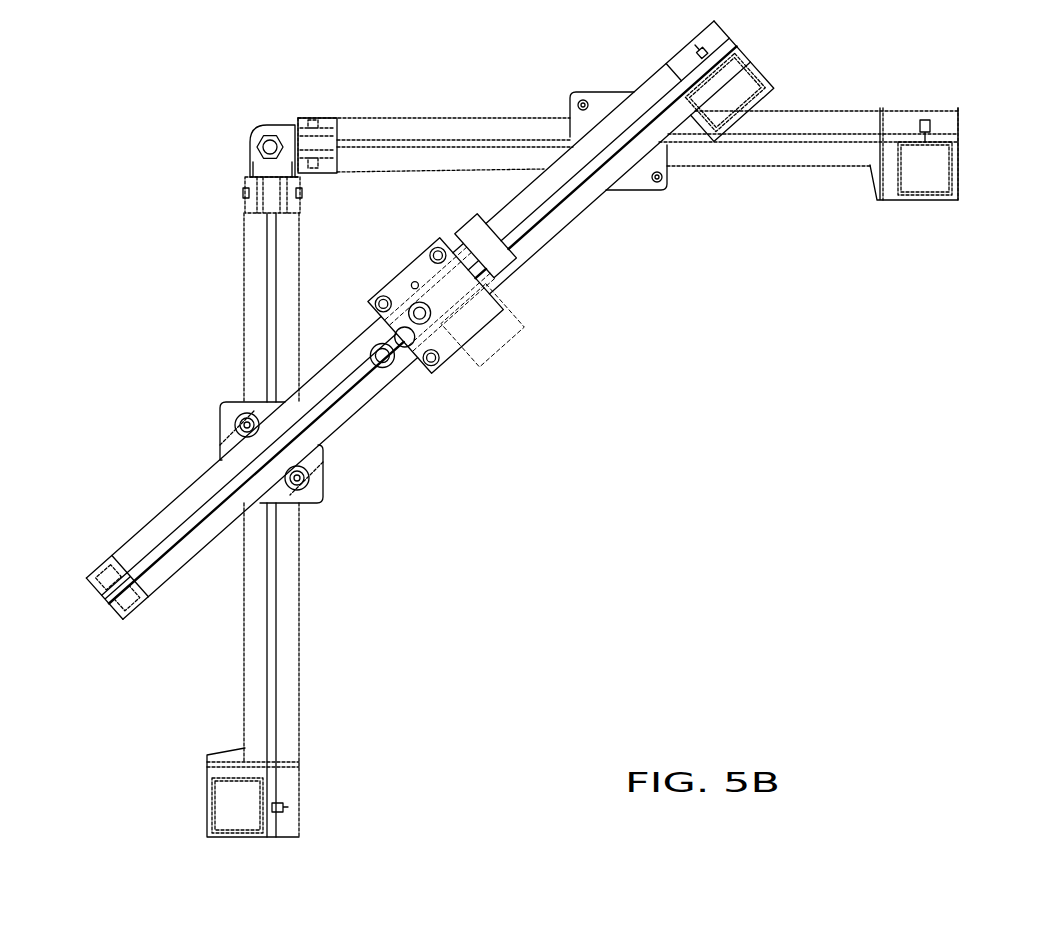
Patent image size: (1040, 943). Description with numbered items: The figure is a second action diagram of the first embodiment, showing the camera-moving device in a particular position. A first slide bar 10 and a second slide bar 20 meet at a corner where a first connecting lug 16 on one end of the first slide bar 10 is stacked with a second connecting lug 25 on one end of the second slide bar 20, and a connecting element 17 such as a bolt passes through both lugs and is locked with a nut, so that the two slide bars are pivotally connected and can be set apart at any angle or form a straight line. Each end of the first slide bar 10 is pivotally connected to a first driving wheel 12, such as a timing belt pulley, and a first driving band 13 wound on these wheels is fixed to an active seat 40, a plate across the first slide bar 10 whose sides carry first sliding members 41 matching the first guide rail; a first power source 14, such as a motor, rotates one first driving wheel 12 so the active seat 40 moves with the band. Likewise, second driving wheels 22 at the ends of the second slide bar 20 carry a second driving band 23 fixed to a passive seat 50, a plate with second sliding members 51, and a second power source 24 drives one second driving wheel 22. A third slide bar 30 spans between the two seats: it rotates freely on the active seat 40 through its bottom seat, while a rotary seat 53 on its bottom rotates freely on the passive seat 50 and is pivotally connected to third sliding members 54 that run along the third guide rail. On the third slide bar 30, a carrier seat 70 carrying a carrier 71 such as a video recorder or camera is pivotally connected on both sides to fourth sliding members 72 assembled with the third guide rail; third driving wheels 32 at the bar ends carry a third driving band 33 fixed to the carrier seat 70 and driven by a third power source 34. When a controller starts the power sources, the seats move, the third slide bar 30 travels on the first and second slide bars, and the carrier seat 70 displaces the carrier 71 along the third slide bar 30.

The first slide bar 10 is at (470, 130).
The first driving wheel 12 is at (322, 135).
The first driving band 13 is at (415, 140).
The first power source 14 is at (940, 184).
The first connecting lug 16 is at (295, 125).
The connecting element 17 is at (265, 130).
The second slide bar 20 is at (287, 640).
The second driving wheel 22 is at (262, 203).
The second driving band 23 is at (275, 262).
The second power source 24 is at (228, 808).
The second connecting lug 25 is at (258, 163).
The third slide bar 30 is at (552, 227).
The third driving wheel 32 is at (118, 600).
The third driving band 33 is at (370, 380).
The third power source 34 is at (730, 84).
The active seat 40 is at (603, 98).
The first sliding member 41 is at (670, 172).
The passive seat 50 is at (308, 500).
The second sliding member 51 is at (325, 477).
The rotary seat 53 is at (226, 427).
The third sliding member 54 is at (238, 403).
The carrier seat 70 is at (450, 350).
The carrier 71 is at (517, 308).
The fourth sliding member 72 is at (423, 236).